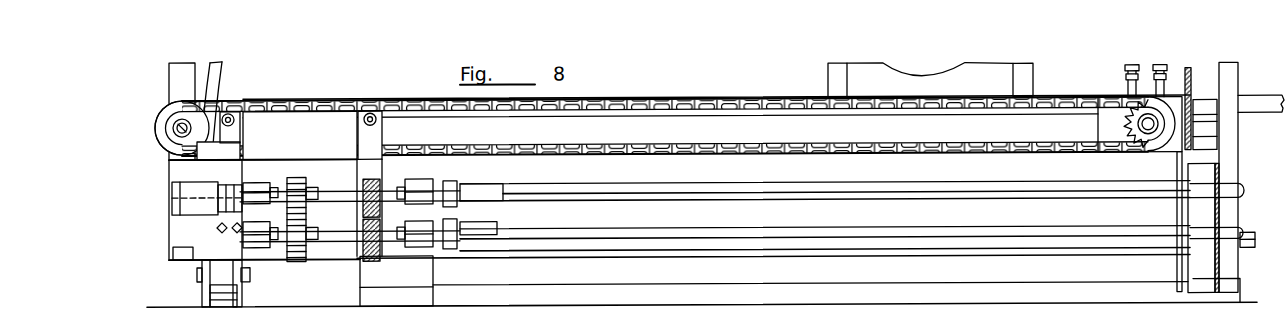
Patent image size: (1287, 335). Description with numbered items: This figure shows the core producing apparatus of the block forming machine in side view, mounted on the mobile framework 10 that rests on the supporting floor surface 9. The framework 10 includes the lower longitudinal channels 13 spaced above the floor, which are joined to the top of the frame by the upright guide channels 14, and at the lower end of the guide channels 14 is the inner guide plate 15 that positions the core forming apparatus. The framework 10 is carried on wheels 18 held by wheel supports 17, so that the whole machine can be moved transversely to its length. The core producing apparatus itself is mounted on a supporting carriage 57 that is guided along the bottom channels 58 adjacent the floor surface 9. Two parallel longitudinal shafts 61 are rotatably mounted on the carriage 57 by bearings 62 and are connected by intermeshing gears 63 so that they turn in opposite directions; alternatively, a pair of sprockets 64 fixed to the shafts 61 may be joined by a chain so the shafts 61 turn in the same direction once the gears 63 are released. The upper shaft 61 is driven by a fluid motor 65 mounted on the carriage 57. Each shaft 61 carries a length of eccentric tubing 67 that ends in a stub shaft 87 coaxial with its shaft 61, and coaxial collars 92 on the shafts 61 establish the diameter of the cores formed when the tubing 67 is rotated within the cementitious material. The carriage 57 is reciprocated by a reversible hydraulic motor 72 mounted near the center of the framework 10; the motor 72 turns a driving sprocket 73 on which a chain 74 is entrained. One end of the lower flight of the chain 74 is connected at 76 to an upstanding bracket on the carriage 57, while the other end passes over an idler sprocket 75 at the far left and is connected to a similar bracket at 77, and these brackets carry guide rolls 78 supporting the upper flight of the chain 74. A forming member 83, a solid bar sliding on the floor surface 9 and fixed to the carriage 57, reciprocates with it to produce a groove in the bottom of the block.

The supporting floor surface 9 is at (657, 82).
The framework 10 is at (755, 100).
The lower longitudinal channels 13 is at (320, 101).
The upright guide channels 14 is at (1226, 86).
The inner guide plate 15 is at (1211, 283).
The wheel supports 17 is at (197, 266).
The wheels 18 is at (226, 307).
The supporting carriage 57 is at (312, 258).
The bottom channels 58 is at (738, 259).
The longitudinal shafts 61 is at (331, 199).
The bearings 62 is at (257, 190).
The intermeshing gears 63 is at (300, 176).
The sprockets 64 is at (377, 189).
The fluid motor 65 is at (182, 194).
The eccentric tubing 67 is at (686, 203).
The hydraulic motor 72 is at (1150, 101).
The driving sprocket 73 is at (1121, 154).
The chain 74 is at (962, 152).
The idler sprocket 75 is at (166, 139).
The chain connection 76 is at (366, 152).
The chain connection 77 is at (230, 150).
The guide rolls 78 is at (230, 114).
The forming member 83 is at (547, 290).
The stub shafts 87 is at (1239, 195).
The coaxial collars 92 is at (503, 204).